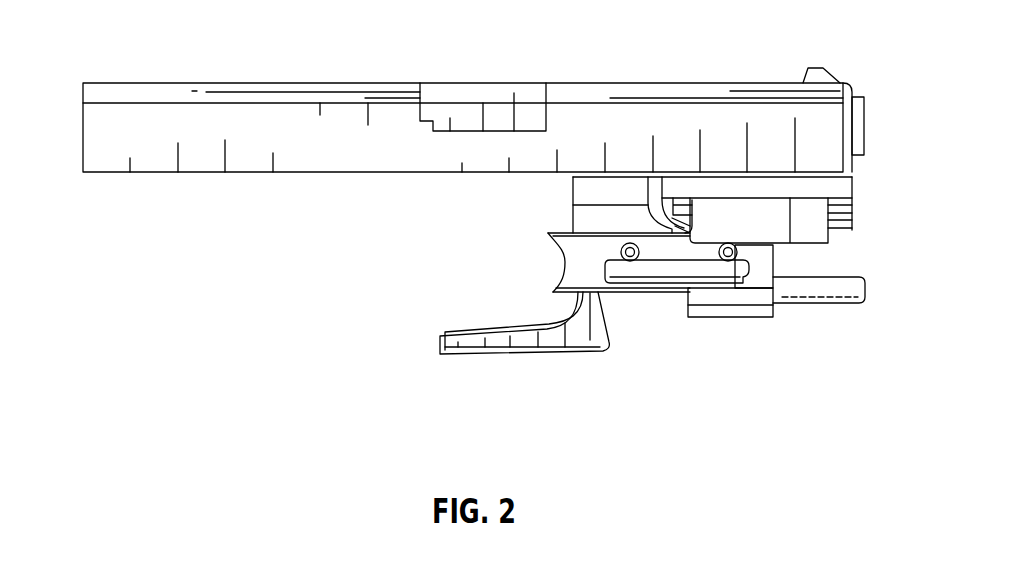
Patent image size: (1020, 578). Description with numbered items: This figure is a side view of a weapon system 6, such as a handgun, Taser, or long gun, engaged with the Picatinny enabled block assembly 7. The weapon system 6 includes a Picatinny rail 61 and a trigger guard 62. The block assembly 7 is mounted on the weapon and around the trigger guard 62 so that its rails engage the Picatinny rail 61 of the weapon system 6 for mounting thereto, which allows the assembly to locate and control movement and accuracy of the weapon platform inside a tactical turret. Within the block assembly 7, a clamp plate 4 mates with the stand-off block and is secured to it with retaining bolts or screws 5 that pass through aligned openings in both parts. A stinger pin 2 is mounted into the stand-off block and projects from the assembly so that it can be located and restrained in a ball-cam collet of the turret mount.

The weapon system 6 is at (652, 83).
The Picatinny rail 61 is at (845, 203).
The clamp plate 4 is at (558, 258).
The retaining bolts or screws 5 is at (720, 256).
The block assembly 7 is at (727, 330).
The stinger pin 2 is at (827, 306).
The trigger guard 62 is at (480, 353).